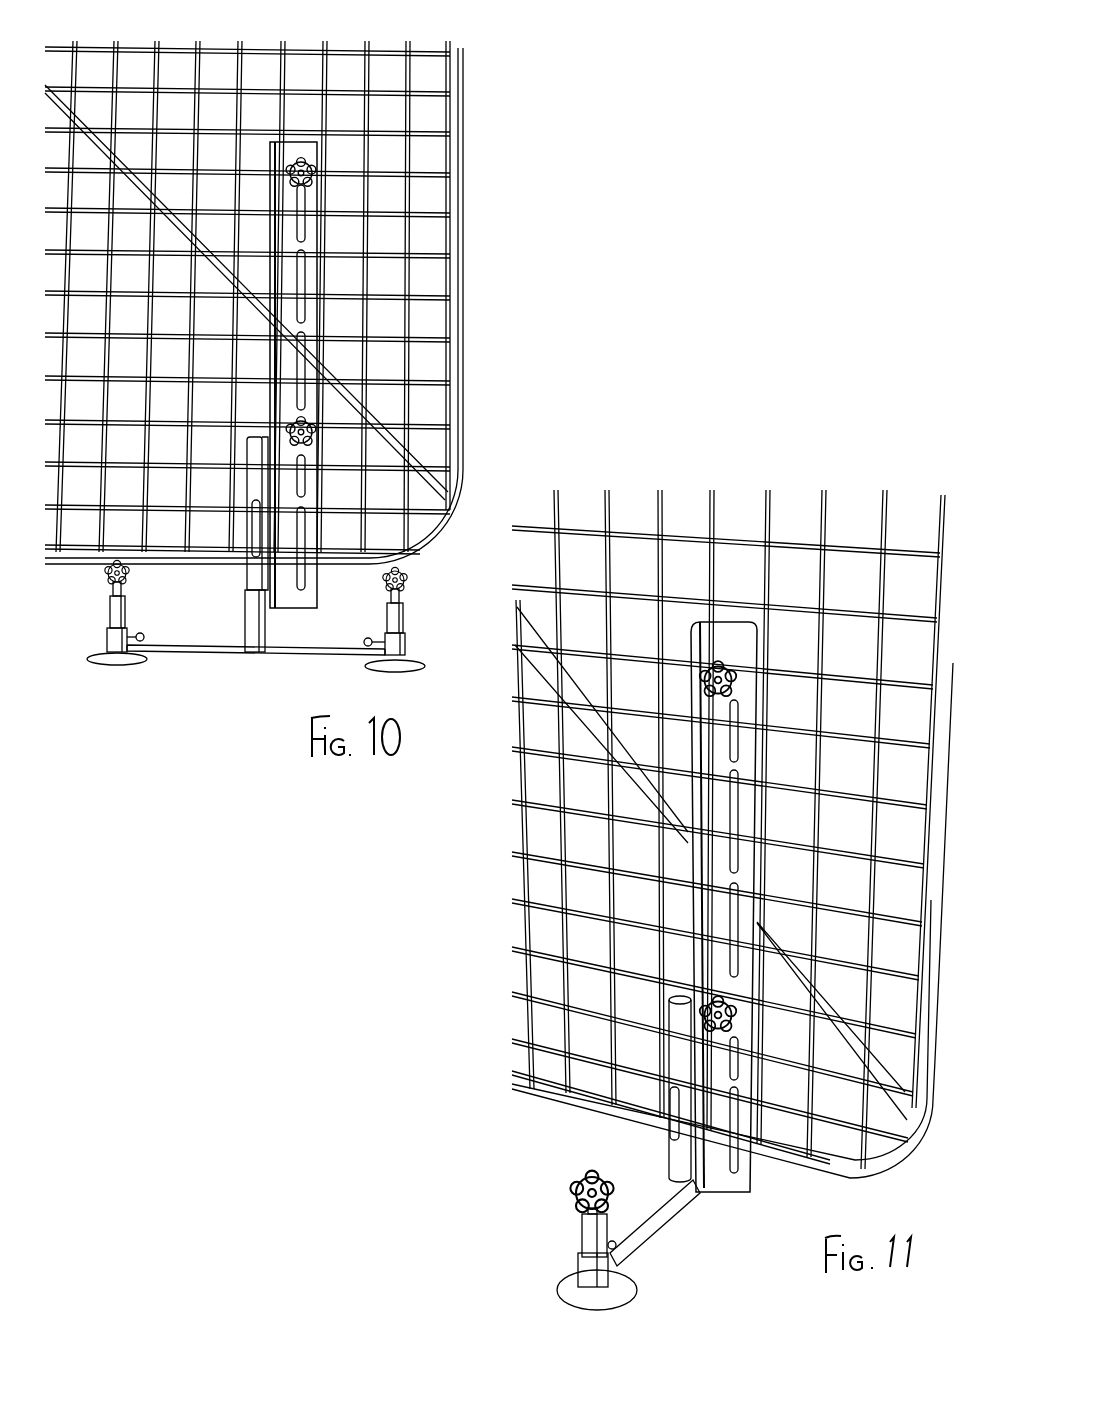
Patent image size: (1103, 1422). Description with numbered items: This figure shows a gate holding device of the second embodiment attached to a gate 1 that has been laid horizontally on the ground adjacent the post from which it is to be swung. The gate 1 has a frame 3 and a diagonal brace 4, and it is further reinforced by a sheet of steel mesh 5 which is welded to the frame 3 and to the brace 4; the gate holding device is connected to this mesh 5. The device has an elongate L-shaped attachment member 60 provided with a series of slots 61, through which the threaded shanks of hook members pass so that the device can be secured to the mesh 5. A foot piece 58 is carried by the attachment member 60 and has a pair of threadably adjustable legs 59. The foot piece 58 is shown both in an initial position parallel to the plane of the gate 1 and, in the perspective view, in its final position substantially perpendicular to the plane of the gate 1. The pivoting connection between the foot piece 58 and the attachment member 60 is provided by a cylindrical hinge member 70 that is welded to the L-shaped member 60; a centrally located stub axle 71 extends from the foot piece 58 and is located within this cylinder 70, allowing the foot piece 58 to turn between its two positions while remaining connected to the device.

In FIG. 10, the gate 1 is at (295, 283).
In FIG. 11, the gate 1 is at (710, 794).
In FIG. 10, the frame 3 is at (470, 82).
In FIG. 11, the frame 3 is at (550, 1097).
In FIG. 10, the diagonal brace 4 is at (83, 115).
In FIG. 10, the steel mesh 5 is at (258, 92).
In FIG. 11, the steel mesh 5 is at (797, 540).
In FIG. 10, the foot piece 58 is at (200, 656).
In FIG. 11, the foot piece 58 is at (665, 1232).
In FIG. 10, the threadably adjustable legs 59 is at (455, 568).
In FIG. 11, the threadably adjustable legs 59 is at (546, 1214).
In FIG. 10, the elongate L-shaped attachment member 60 is at (300, 598).
In FIG. 11, the elongate L-shaped attachment member 60 is at (766, 928).
In FIG. 11, the slots 61 is at (818, 716).
In FIG. 10, the cylindrical hinge member 70 is at (250, 590).
In FIG. 10, the stub axle 71 is at (247, 626).